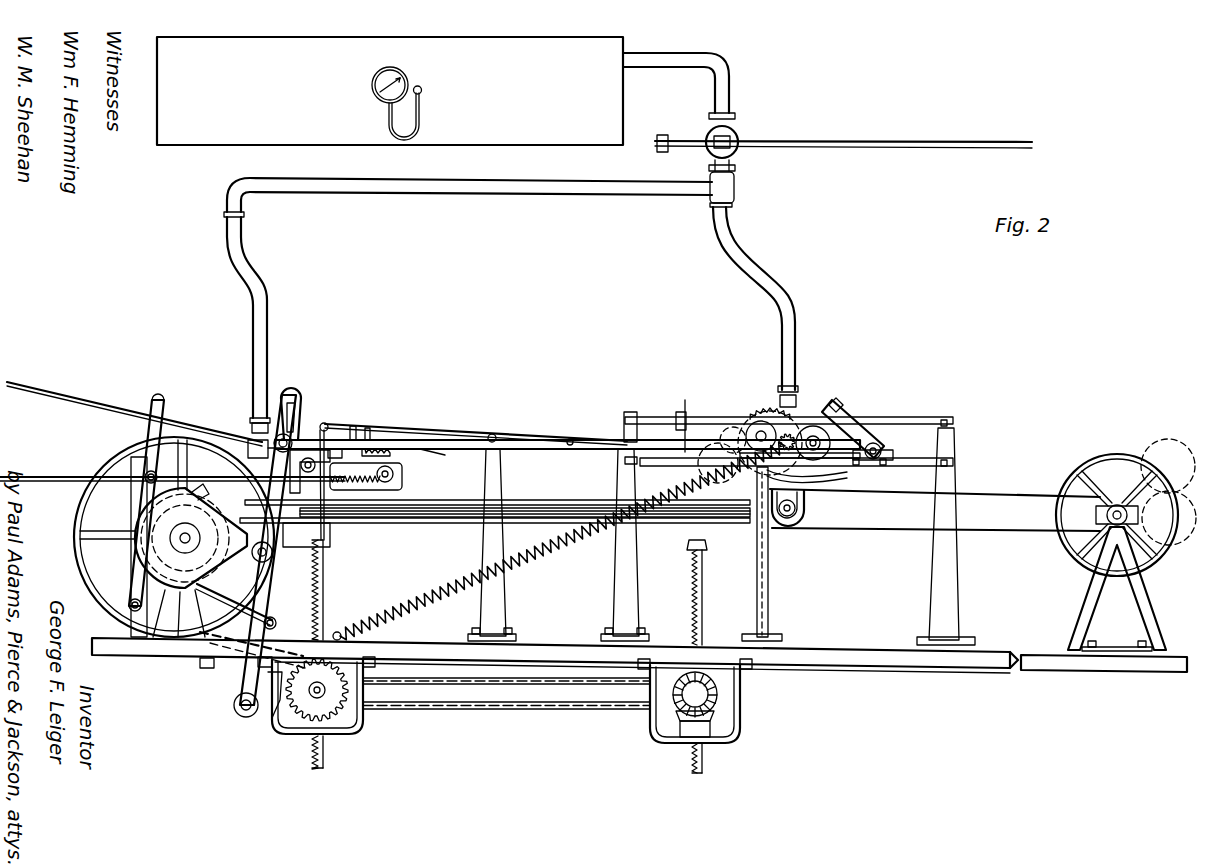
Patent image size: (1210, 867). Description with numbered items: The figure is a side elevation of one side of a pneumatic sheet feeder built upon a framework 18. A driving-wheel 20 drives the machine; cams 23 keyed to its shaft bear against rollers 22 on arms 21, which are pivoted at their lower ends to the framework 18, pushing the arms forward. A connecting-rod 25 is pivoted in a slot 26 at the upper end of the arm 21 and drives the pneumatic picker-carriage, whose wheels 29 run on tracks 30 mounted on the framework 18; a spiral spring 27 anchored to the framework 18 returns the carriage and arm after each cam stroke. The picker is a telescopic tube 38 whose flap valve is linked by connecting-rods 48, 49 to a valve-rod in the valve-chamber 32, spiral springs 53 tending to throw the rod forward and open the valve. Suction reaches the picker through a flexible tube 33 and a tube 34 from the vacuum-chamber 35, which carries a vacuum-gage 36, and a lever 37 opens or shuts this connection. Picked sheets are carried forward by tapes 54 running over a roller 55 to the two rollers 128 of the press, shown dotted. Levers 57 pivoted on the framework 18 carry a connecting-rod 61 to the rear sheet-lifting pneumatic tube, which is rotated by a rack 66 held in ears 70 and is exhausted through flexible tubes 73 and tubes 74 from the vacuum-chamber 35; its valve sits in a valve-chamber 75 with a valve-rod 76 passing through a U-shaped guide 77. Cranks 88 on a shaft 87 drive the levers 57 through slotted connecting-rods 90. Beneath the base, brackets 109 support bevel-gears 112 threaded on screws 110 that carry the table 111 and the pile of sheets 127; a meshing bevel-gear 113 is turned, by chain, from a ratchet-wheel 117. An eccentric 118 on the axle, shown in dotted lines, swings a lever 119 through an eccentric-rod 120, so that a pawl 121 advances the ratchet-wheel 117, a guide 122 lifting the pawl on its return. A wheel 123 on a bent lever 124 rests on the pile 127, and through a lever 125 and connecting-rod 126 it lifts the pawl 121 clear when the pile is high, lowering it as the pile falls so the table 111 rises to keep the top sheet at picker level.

The framework 18 is at (435, 640).
The driving-wheel 20 is at (84, 570).
The arms 21 is at (242, 680).
The rollers 22 is at (234, 602).
The cams 23 is at (191, 536).
The connecting-rod 25 is at (547, 438).
The slot 26 is at (299, 412).
The spiral spring 27 is at (560, 553).
The wheels 29 is at (752, 426).
The tracks 30 is at (945, 420).
The valve-chamber 32 is at (792, 430).
The flexible tube 33 is at (796, 297).
The tube 34 is at (735, 179).
The vacuum-chamber 35 is at (390, 91).
The vacuum-gage 36 is at (372, 90).
The lever 37 is at (858, 141).
The telescopic tube or picker 38 is at (802, 487).
The connecting-rod 48 is at (830, 472).
The connecting-rod 49 is at (722, 432).
The spiral springs 53 is at (762, 407).
The tapes 54 is at (1003, 480).
The roller 55 is at (798, 508).
The levers 57 is at (162, 402).
The connecting-rod 61 is at (47, 477).
The rack 66 is at (395, 473).
The ears 70 is at (310, 473).
The flexible tubes 73 is at (267, 325).
The tubes 74 is at (485, 189).
The valve-chamber 75 is at (252, 440).
The valve-rod 76 is at (445, 455).
The U-shaped guide 77 is at (386, 449).
The shaft 87 is at (312, 457).
The cranks 88 is at (364, 447).
The connecting-rods 90 is at (98, 404).
The brackets 109 is at (363, 731).
The screws 110 is at (325, 592).
The table 111 is at (522, 521).
The bevel-gears 112 is at (714, 716).
The bevel-gear 113 is at (718, 690).
The ratchet-wheel 117 is at (310, 712).
The eccentric 118 is at (185, 538).
The lever 119 is at (277, 712).
The eccentric-rod 120 is at (225, 632).
The pawl 121 is at (275, 618).
The guide 122 is at (309, 688).
The wheel 123 is at (712, 445).
The bent lever 124 is at (628, 420).
The lever 125 is at (440, 428).
The connecting-rod 126 is at (330, 537).
The pile of paper sheets 127 is at (570, 505).
The rollers of printing-press 128 is at (1168, 440).